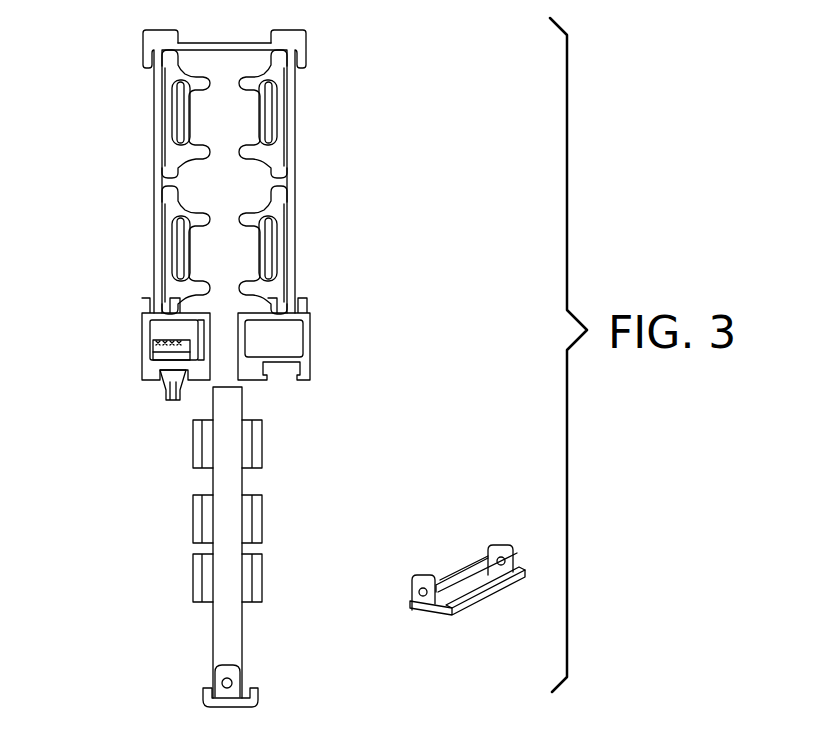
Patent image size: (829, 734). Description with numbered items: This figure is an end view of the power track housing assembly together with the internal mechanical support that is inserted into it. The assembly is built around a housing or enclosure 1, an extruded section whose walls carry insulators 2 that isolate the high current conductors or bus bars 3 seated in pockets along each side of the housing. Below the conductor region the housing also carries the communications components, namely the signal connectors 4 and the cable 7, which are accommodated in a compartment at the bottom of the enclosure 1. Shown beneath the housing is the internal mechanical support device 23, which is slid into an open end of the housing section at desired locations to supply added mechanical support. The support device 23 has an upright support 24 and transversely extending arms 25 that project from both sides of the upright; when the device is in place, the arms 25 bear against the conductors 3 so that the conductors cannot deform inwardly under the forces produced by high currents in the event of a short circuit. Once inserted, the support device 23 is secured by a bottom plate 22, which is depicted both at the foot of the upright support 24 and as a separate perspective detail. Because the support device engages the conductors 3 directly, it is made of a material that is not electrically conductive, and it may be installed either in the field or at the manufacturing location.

The housing or enclosure 1 is at (294, 43).
The insulators 2 is at (167, 118).
The high current conductors or bus bars 3 is at (180, 103).
The signal connectors 4 is at (170, 378).
The cable 7 is at (165, 343).
The bottom plate 22 is at (372, 598).
The internal mechanical support device 23 is at (225, 478).
The upright support 24 is at (233, 634).
The transversely extending arms 25 is at (262, 512).